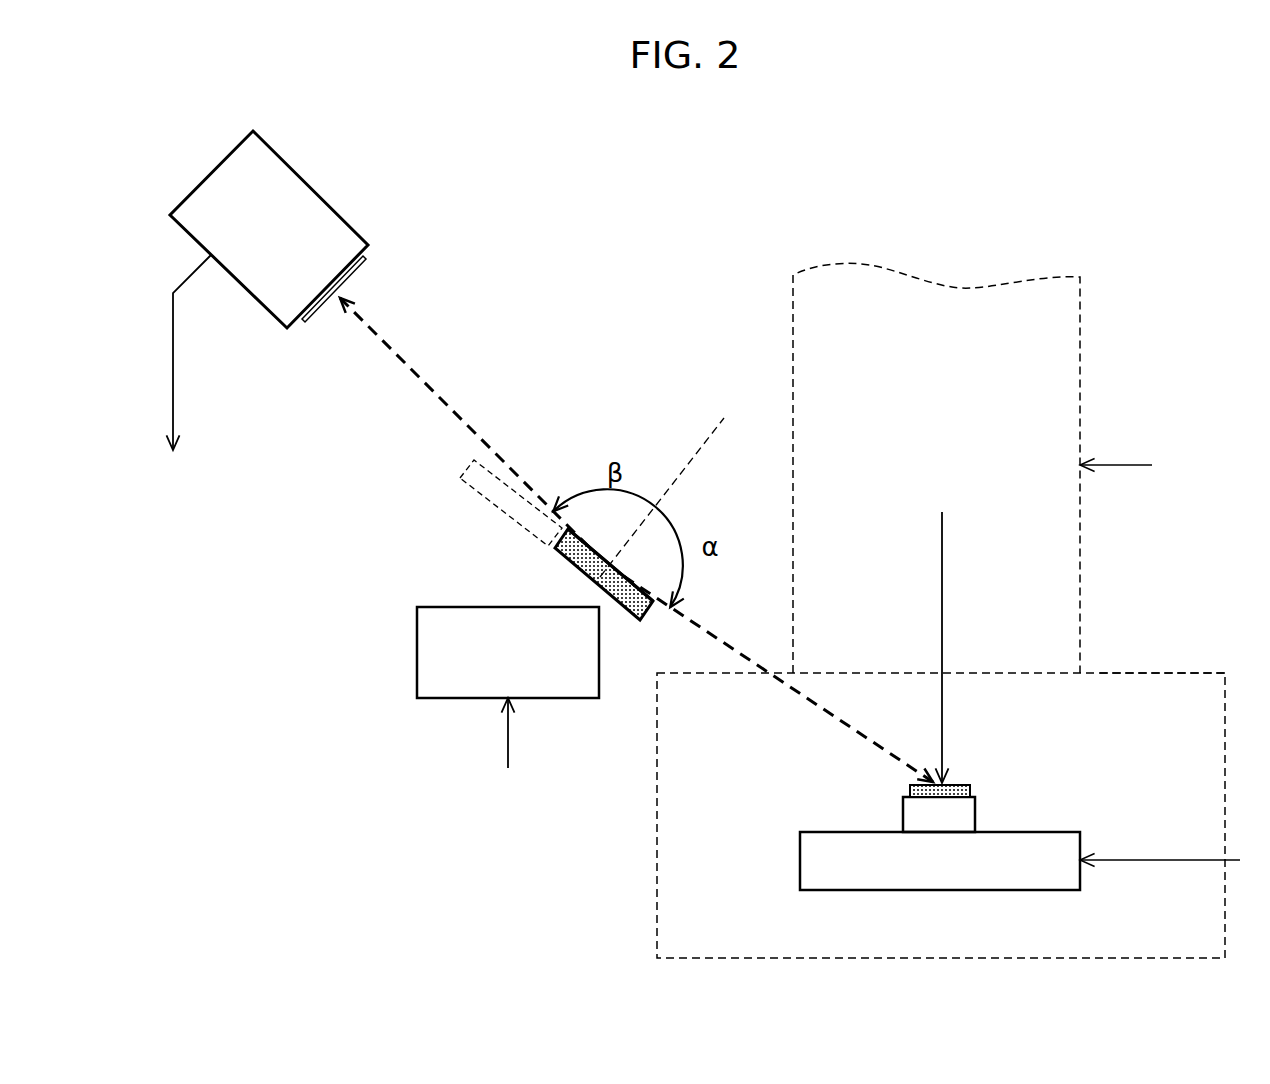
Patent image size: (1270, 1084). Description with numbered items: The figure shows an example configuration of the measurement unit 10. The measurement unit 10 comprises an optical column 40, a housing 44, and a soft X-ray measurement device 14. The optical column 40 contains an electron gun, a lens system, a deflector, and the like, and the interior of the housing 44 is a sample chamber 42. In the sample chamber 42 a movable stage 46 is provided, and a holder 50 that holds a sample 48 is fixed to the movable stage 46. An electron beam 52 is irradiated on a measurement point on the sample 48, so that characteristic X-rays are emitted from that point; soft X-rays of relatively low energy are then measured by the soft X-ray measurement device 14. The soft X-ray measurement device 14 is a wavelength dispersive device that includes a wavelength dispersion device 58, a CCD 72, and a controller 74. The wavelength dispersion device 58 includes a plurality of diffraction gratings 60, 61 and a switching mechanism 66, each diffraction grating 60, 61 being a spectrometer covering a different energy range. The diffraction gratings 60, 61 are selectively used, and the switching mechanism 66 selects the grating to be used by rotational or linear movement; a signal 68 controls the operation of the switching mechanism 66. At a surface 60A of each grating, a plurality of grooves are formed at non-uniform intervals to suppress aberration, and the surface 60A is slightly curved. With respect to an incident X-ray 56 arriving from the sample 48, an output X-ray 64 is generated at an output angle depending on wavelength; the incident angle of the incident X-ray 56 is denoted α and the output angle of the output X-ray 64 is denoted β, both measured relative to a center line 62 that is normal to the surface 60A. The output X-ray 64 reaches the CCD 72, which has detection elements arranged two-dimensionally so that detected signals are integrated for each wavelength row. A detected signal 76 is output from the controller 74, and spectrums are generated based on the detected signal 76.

The measurement unit 10 is at (953, 212).
The soft X-ray measurement device 14 is at (610, 318).
The optical column 40 is at (972, 468).
The sample chamber 42 is at (941, 815).
The housing 44 is at (1148, 673).
The movable stage 46 is at (800, 865).
The sample 48 is at (960, 783).
The holder 50 is at (975, 807).
The electron beam 52 is at (943, 572).
The incident X-ray 56 is at (795, 685).
The wavelength dispersion device 58 is at (430, 530).
The diffraction grating 60 is at (627, 617).
The surface 60A is at (605, 566).
The diffraction grating 61 is at (467, 472).
The center line 62 is at (693, 458).
The output X-ray 64 is at (463, 423).
The switching mechanism 66 is at (503, 607).
The signal 68 is at (508, 735).
The CCD 72 is at (313, 318).
The controller 74 is at (269, 229).
The detected signal 76 is at (173, 373).